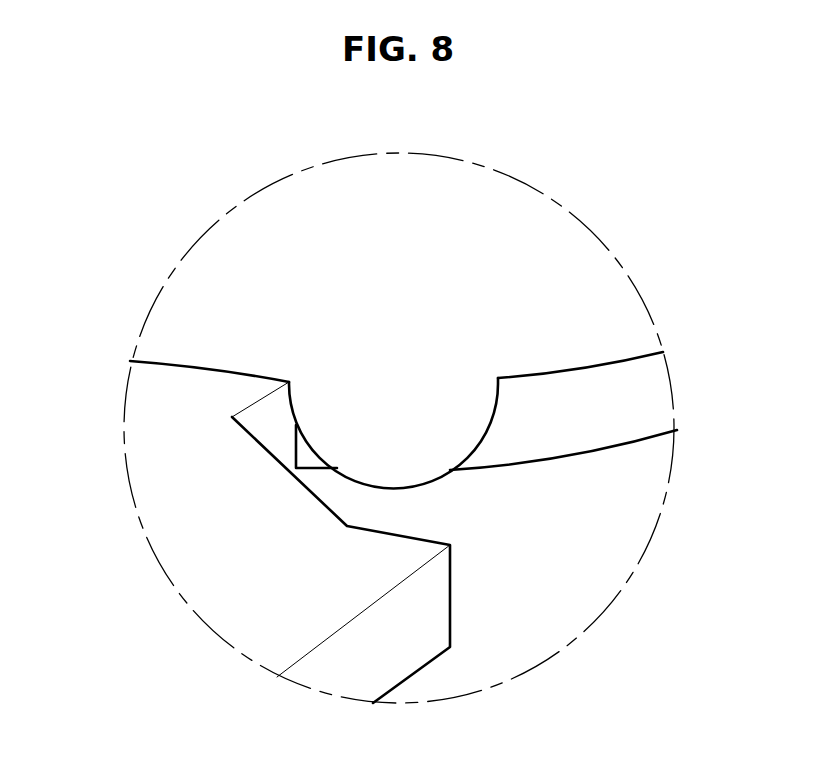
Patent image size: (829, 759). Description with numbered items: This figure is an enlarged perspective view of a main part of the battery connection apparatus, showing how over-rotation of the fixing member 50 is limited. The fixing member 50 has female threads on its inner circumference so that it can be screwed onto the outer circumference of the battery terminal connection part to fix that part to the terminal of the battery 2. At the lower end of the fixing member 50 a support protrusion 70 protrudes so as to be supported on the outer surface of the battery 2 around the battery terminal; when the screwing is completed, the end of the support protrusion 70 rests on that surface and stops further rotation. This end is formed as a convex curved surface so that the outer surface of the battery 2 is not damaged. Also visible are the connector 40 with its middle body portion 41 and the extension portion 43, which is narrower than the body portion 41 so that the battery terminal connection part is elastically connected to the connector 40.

The battery 2 is at (602, 595).
The fixing member 50 is at (565, 230).
The support protrusion 70 is at (493, 422).
The extension portion 43 is at (267, 422).
The connector 40 is at (272, 560).
The body portion 41 is at (363, 611).